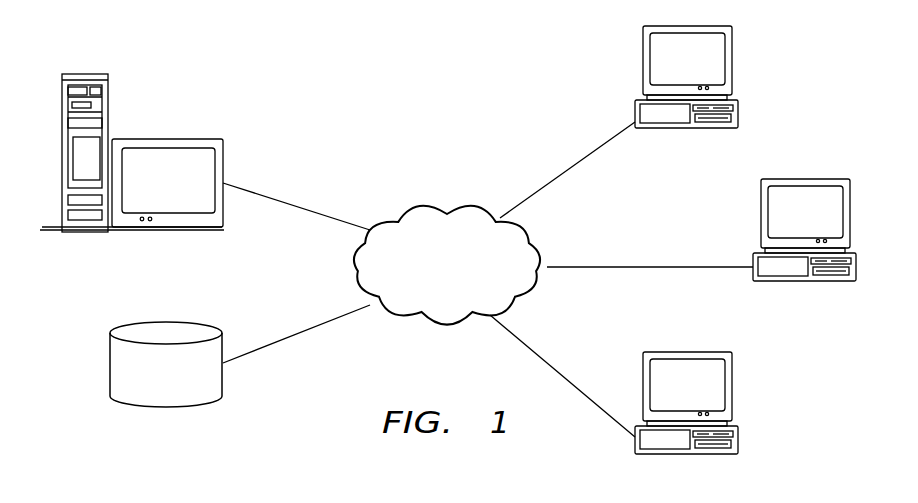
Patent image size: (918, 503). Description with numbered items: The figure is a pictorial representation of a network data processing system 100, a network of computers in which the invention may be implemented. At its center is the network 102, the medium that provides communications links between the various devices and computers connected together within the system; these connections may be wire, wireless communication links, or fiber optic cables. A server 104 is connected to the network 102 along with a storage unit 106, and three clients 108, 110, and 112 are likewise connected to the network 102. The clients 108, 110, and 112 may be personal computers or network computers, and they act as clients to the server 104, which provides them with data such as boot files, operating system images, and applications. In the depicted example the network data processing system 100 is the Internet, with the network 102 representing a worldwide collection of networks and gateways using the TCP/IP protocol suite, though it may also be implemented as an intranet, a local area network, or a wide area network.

The network data processing system 100 is at (314, 65).
The network 102 is at (467, 290).
The server 104 is at (107, 97).
The storage unit 106 is at (110, 363).
The client 108 is at (732, 67).
The client 110 is at (850, 217).
The client 112 is at (730, 390).